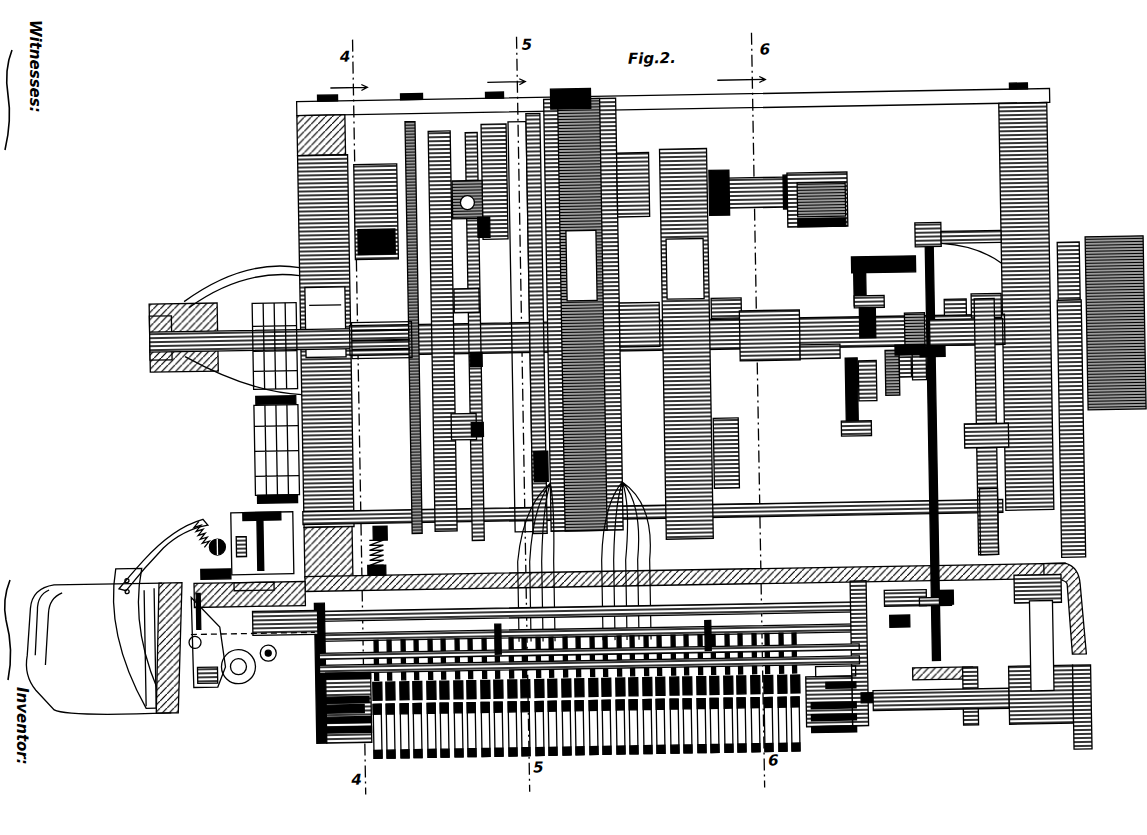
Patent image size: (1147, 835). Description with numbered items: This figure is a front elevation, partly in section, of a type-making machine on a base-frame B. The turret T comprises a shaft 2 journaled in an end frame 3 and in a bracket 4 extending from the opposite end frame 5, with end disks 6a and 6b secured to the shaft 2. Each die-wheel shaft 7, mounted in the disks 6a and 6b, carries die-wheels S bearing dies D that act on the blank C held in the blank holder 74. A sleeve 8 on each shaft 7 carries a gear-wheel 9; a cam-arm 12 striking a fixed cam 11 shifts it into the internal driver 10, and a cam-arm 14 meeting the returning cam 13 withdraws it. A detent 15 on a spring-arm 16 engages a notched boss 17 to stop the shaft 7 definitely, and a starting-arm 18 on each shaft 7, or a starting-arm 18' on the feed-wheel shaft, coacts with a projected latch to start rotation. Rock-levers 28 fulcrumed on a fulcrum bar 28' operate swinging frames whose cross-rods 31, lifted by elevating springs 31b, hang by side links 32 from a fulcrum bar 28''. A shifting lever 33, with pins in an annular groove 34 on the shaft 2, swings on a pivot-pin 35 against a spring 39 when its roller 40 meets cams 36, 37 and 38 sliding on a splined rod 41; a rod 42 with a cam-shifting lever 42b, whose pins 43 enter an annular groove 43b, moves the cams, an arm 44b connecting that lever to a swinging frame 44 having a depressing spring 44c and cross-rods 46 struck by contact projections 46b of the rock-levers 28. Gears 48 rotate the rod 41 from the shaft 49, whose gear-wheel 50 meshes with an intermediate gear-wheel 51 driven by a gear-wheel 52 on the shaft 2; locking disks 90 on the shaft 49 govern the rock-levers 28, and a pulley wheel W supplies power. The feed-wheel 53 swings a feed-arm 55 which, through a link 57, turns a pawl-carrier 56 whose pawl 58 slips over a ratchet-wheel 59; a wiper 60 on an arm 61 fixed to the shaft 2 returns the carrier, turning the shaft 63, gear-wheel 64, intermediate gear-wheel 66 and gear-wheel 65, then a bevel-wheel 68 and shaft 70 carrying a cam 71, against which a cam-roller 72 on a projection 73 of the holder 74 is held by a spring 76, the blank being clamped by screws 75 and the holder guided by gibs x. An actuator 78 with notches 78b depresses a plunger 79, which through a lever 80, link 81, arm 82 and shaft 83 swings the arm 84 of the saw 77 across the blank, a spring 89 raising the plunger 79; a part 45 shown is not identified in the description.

The shaft 2 is at (775, 320).
The end frame 3 is at (1040, 214).
The bracket 4 is at (246, 292).
The end frame 5 is at (301, 129).
The end disk 6a is at (340, 422).
The end disk 6b is at (696, 343).
The die-wheel shaft 7 is at (389, 324).
The sleeve 8 is at (471, 262).
The gear-wheel 9 is at (431, 327).
The driver 10 is at (410, 382).
The fixed actuating cam 11 is at (458, 178).
The cam-arm 12 is at (460, 300).
The returning cam 13 is at (475, 224).
The cam-arm 14 is at (505, 162).
The detent 15 is at (748, 190).
The spring-arm 16 is at (735, 172).
The boss 17 is at (742, 212).
The starting-arm 18 is at (585, 384).
The starting-arm 18' is at (637, 168).
The rock-lever 28 is at (588, 636).
The fulcrum bar 28' is at (588, 631).
The fulcrum bar 28'' is at (887, 717).
The cross-rod 31 is at (460, 615).
The elevating spring 31b is at (340, 744).
The side link 32 is at (318, 706).
The shifting lever 33 is at (957, 318).
The annular groove 34 is at (993, 305).
The pivot-pin 35 is at (966, 306).
The cam 36 is at (863, 318).
The cam 37 is at (882, 506).
The cam 38 is at (918, 320).
The spring 39 is at (1002, 313).
The roller 40 is at (1003, 348).
The splined rod 41 is at (935, 412).
The rod 42 is at (927, 463).
The cam-shifting lever 42b is at (899, 393).
The pin 43 is at (888, 380).
The annular groove 43b is at (907, 387).
The swinging frame 44 is at (893, 629).
The arm 44b is at (948, 616).
The depressing spring 44c is at (902, 605).
The base frame 45 is at (300, 590).
The cross-rod 46 is at (745, 626).
The contact projection 46b is at (496, 630).
The gear 48 is at (956, 684).
The shaft 49 is at (930, 708).
The gear-wheel 50 is at (1085, 686).
The intermediate gear-wheel 51 is at (1080, 552).
The gear-wheel 52 is at (1071, 251).
The feed-wheel 53 is at (826, 176).
The feed-arm 55 is at (770, 354).
The pawl-carrier 56 is at (860, 399).
The link 57 is at (872, 427).
The spring-pressed pawl 58 is at (850, 382).
The ratchet-wheel 59 is at (809, 380).
The wiper 60 is at (884, 258).
The arm 61 is at (855, 297).
The shaft 63 is at (858, 318).
The gear-wheel 64 is at (1005, 426).
The gear-wheel 65 is at (978, 535).
The intermediate gear-wheel 66 is at (968, 468).
The bevel-wheel 68 is at (252, 512).
The shaft 70 is at (281, 633).
The cam 71 is at (194, 588).
The cam-roller 72 is at (249, 581).
The projection 73 is at (207, 545).
The blank holder 74 is at (244, 540).
The screw 75 is at (252, 641).
The spring 76 is at (276, 666).
The saw 77 is at (164, 547).
The actuator 78 is at (374, 195).
The notch 78b is at (372, 252).
The plunger 79 is at (376, 522).
The lever 80 is at (197, 694).
The link 81 is at (168, 672).
The arm 82 is at (215, 682).
The shaft 83 is at (243, 673).
The arm 84 is at (133, 628).
The spring 89 is at (388, 555).
The locking disk 90 is at (562, 752).
The base-frame B is at (588, 613).
The blank C is at (262, 543).
The die D is at (251, 453).
The die-wheel S is at (262, 399).
The turret T is at (593, 310).
The pulley wheel W is at (1116, 339).
The gib x is at (197, 570).